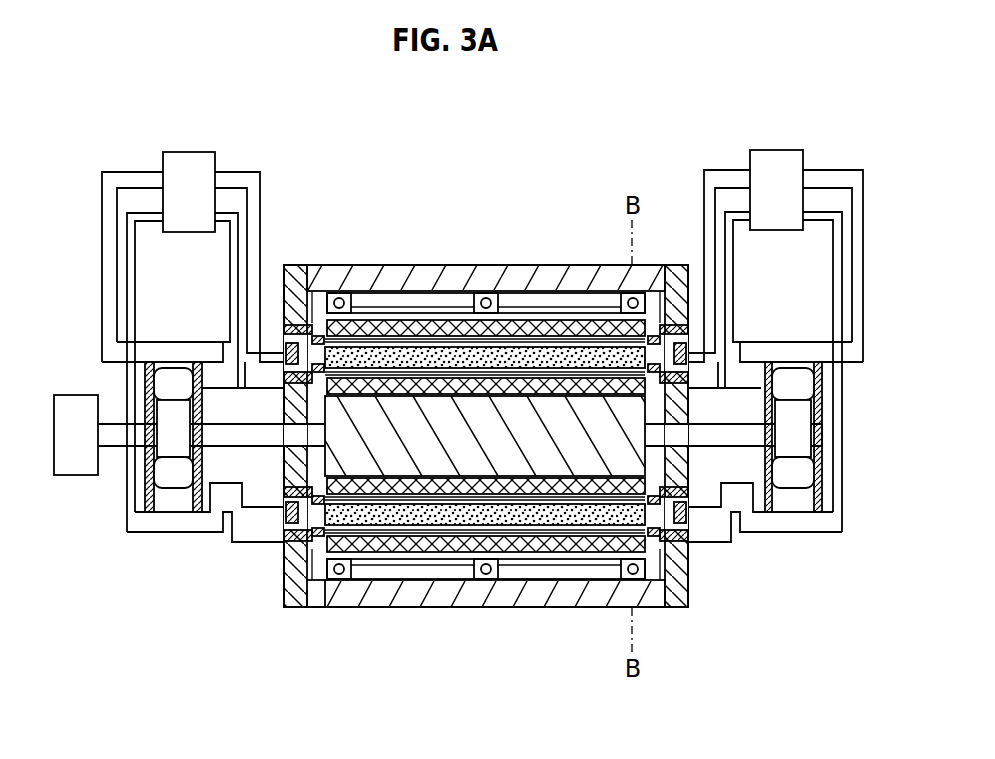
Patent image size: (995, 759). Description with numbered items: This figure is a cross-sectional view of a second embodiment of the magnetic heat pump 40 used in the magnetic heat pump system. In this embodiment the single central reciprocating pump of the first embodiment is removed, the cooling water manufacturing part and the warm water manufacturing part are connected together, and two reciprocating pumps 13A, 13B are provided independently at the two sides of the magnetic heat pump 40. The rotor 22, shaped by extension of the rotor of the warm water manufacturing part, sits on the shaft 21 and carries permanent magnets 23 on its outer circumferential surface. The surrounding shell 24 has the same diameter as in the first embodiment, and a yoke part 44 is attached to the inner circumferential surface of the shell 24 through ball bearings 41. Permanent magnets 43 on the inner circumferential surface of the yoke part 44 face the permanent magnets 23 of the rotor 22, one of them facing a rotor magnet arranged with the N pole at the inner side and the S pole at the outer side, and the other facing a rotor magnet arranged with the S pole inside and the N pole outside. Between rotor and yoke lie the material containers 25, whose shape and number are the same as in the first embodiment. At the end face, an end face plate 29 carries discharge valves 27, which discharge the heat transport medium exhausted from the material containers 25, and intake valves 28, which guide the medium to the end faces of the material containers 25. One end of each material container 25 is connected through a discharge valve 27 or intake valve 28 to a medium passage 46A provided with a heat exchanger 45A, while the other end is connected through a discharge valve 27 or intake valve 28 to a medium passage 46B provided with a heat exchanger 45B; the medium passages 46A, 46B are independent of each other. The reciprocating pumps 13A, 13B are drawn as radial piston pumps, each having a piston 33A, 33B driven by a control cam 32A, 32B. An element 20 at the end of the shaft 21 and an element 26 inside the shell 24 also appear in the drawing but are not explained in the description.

The reciprocating pump 13A is at (189, 558).
The reciprocating pump 13B is at (770, 542).
The load/drive unit 20 is at (74, 472).
The shaft 21 is at (273, 483).
The rotor 22 is at (381, 460).
The permanent magnets 23 is at (470, 405).
The shell 24 is at (495, 595).
The material containers 25 is at (570, 350).
The stator core 26 is at (598, 380).
The discharge valve 27 is at (283, 340).
The intake valve 28 is at (303, 326).
The end face plate 29 is at (285, 592).
The control cam 32A is at (149, 514).
The control cam 32B is at (843, 535).
The piston 33A is at (177, 482).
The piston 33B is at (793, 497).
The magnetic heat pump 40 is at (480, 222).
The ball bearings 41 is at (362, 296).
The permanent magnets 43 is at (356, 582).
The yoke part 44 is at (406, 322).
The heat exchanger 45A is at (190, 152).
The heat exchanger 45B is at (790, 150).
The medium passage 46A is at (141, 276).
The medium passage 46B is at (742, 290).